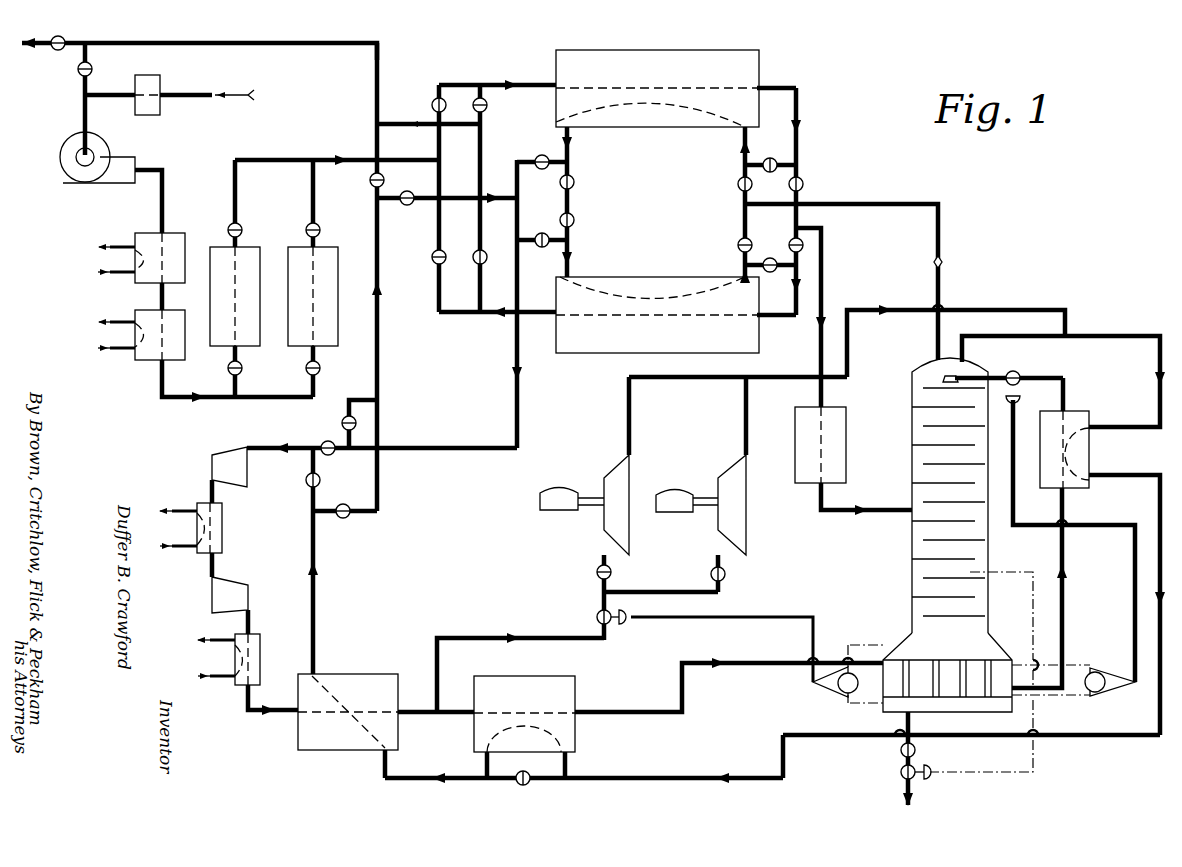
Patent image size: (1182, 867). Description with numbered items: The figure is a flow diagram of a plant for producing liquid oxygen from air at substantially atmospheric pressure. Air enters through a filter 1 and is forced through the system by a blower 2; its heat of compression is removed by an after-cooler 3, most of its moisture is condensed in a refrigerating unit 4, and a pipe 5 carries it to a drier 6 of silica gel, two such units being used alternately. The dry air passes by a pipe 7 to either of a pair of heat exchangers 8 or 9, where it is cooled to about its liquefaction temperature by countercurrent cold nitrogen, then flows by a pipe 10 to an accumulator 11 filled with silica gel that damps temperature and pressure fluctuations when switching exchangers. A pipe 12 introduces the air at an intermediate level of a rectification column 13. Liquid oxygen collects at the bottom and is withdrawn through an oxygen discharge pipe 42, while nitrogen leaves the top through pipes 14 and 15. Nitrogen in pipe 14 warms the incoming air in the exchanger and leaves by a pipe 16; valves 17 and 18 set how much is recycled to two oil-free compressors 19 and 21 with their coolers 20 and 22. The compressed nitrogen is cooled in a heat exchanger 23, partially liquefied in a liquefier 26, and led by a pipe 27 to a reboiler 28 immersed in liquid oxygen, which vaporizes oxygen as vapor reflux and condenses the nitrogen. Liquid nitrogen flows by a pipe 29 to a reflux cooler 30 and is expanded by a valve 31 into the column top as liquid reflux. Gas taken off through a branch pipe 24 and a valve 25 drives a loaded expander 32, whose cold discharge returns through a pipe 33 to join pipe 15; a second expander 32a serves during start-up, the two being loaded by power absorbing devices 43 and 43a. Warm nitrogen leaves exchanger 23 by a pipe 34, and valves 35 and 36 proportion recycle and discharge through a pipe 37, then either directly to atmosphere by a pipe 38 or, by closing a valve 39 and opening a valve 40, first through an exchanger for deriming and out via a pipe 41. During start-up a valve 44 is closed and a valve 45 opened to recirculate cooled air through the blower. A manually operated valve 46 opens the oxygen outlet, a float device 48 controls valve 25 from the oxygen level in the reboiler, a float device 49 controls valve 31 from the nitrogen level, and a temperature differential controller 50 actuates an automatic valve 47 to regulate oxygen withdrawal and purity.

The filter 1 is at (150, 112).
The blower 2 is at (82, 172).
The after-cooler 3 is at (175, 240).
The refrigerating unit 4 is at (145, 365).
The pipe 5 is at (208, 400).
The drier 6 is at (308, 340).
The pipe 7 is at (268, 158).
The heat exchanger 8 is at (570, 58).
The heat exchanger 9 is at (585, 345).
The pipe 10 is at (825, 290).
The accumulator 11 is at (838, 424).
The pipe 12 is at (818, 500).
The rectification column 13 is at (908, 545).
The pipe 14 is at (945, 232).
The pipe 15 is at (1075, 325).
The pipe 16 is at (512, 392).
The valve 17 is at (342, 423).
The valve 18 is at (334, 452).
The compressor 19 is at (225, 457).
The cooler 20 is at (222, 530).
The compressor 21 is at (215, 597).
The cooler 22 is at (255, 642).
The heat exchanger 23 is at (298, 738).
The branch pipe 24 is at (450, 636).
The valve 25 is at (597, 612).
The liquefier 26 is at (575, 732).
The pipe 27 is at (768, 668).
The reboiler 28 is at (950, 675).
The pipe 29 is at (1066, 608).
The reflux cooler 30 is at (1045, 478).
The valve 31 is at (1020, 372).
The expander 32 is at (735, 532).
The expander 32a is at (620, 530).
The pipe 33 is at (765, 382).
The pipe 34 is at (318, 594).
The valve 35 is at (306, 484).
The valve 36 is at (345, 520).
The pipe 37 is at (380, 348).
The pipe 38 is at (250, 45).
The valve 39 is at (370, 185).
The valve 40 is at (405, 206).
The pipe 41 is at (425, 120).
The oxygen discharge pipe 42 is at (900, 730).
The power absorbing device 43 is at (677, 490).
The power absorbing device 43a is at (553, 512).
The valve 44 is at (65, 40).
The valve 45 is at (80, 72).
The manually operated valve 46 is at (900, 752).
The automatic valve 47 is at (916, 780).
The float device 48 is at (820, 688).
The float device 49 is at (1110, 690).
The temperature differential controller 50 is at (995, 570).